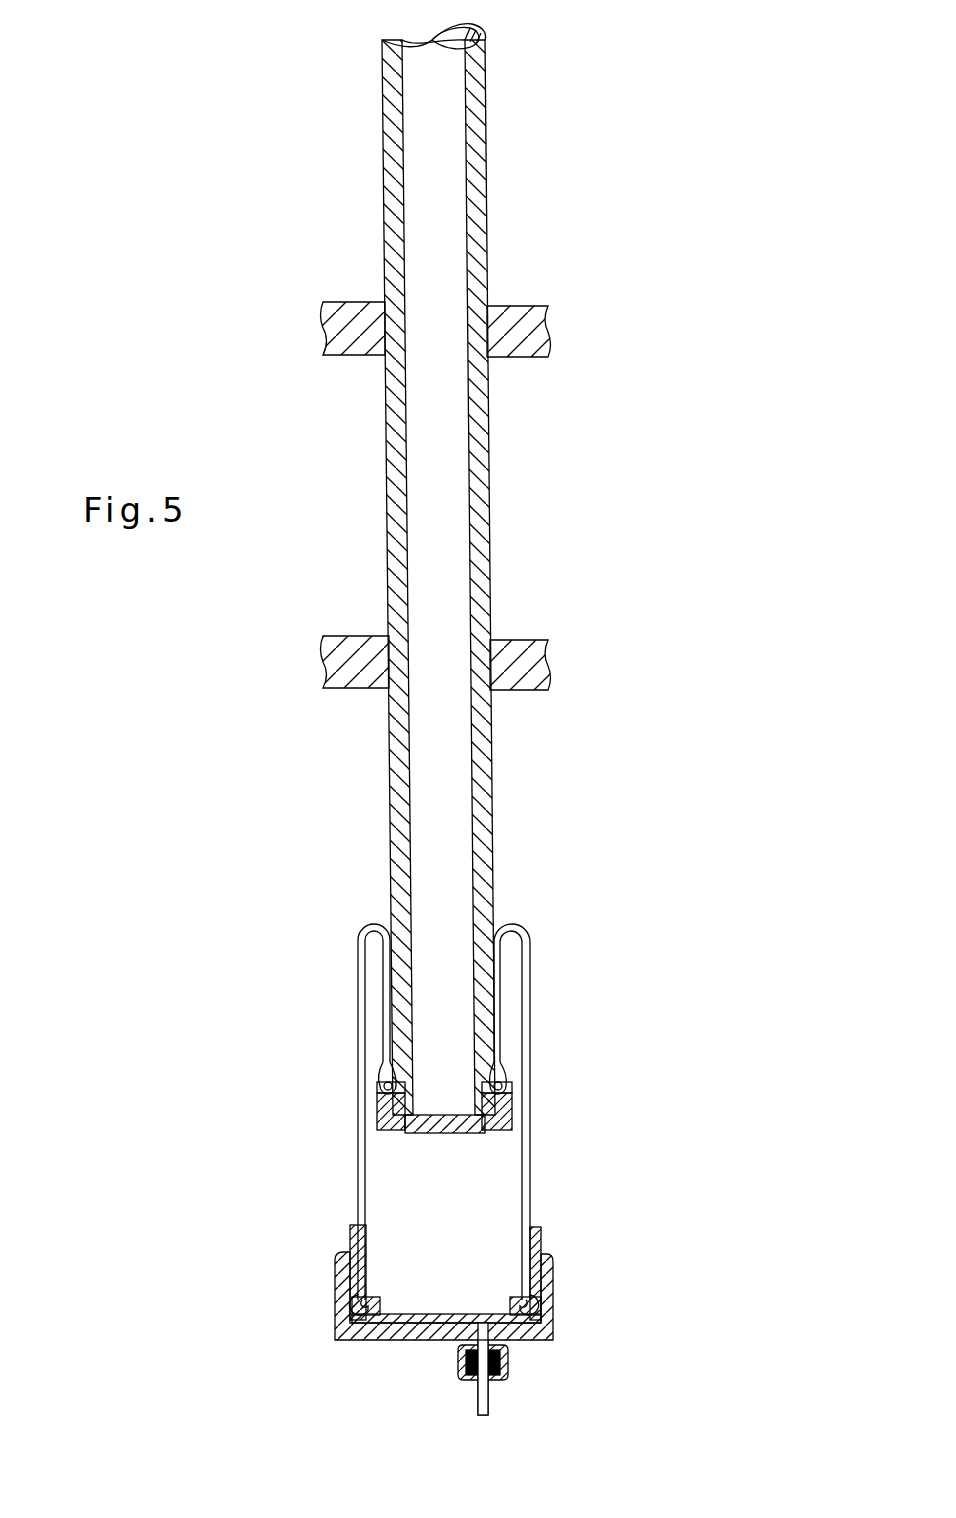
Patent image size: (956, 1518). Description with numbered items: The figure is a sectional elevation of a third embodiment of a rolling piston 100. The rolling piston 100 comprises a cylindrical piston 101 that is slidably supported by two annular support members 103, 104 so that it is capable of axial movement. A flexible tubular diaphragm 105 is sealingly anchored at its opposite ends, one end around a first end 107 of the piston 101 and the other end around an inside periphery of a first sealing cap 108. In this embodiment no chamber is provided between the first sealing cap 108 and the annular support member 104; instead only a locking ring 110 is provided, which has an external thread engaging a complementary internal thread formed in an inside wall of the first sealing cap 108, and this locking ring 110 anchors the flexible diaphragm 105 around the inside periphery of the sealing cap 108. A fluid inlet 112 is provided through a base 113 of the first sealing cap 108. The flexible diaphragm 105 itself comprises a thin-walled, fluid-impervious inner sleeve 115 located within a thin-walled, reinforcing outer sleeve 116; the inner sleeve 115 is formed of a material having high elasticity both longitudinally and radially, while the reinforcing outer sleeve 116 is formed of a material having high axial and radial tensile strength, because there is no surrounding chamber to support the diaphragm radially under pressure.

The rolling piston 100 is at (553, 510).
The cylindrical piston 101 is at (480, 212).
The annular support member 103 is at (540, 333).
The annular support member 104 is at (530, 668).
The flexible tubular diaphragm 105 is at (537, 1139).
The first end 107 is at (460, 1133).
The first sealing cap 108 is at (549, 1317).
The locking ring 110 is at (539, 1248).
The fluid inlet 112 is at (490, 1392).
The base 113 is at (405, 1330).
The inner sleeve 115 is at (364, 1181).
The reinforcing outer sleeve 116 is at (462, 1119).